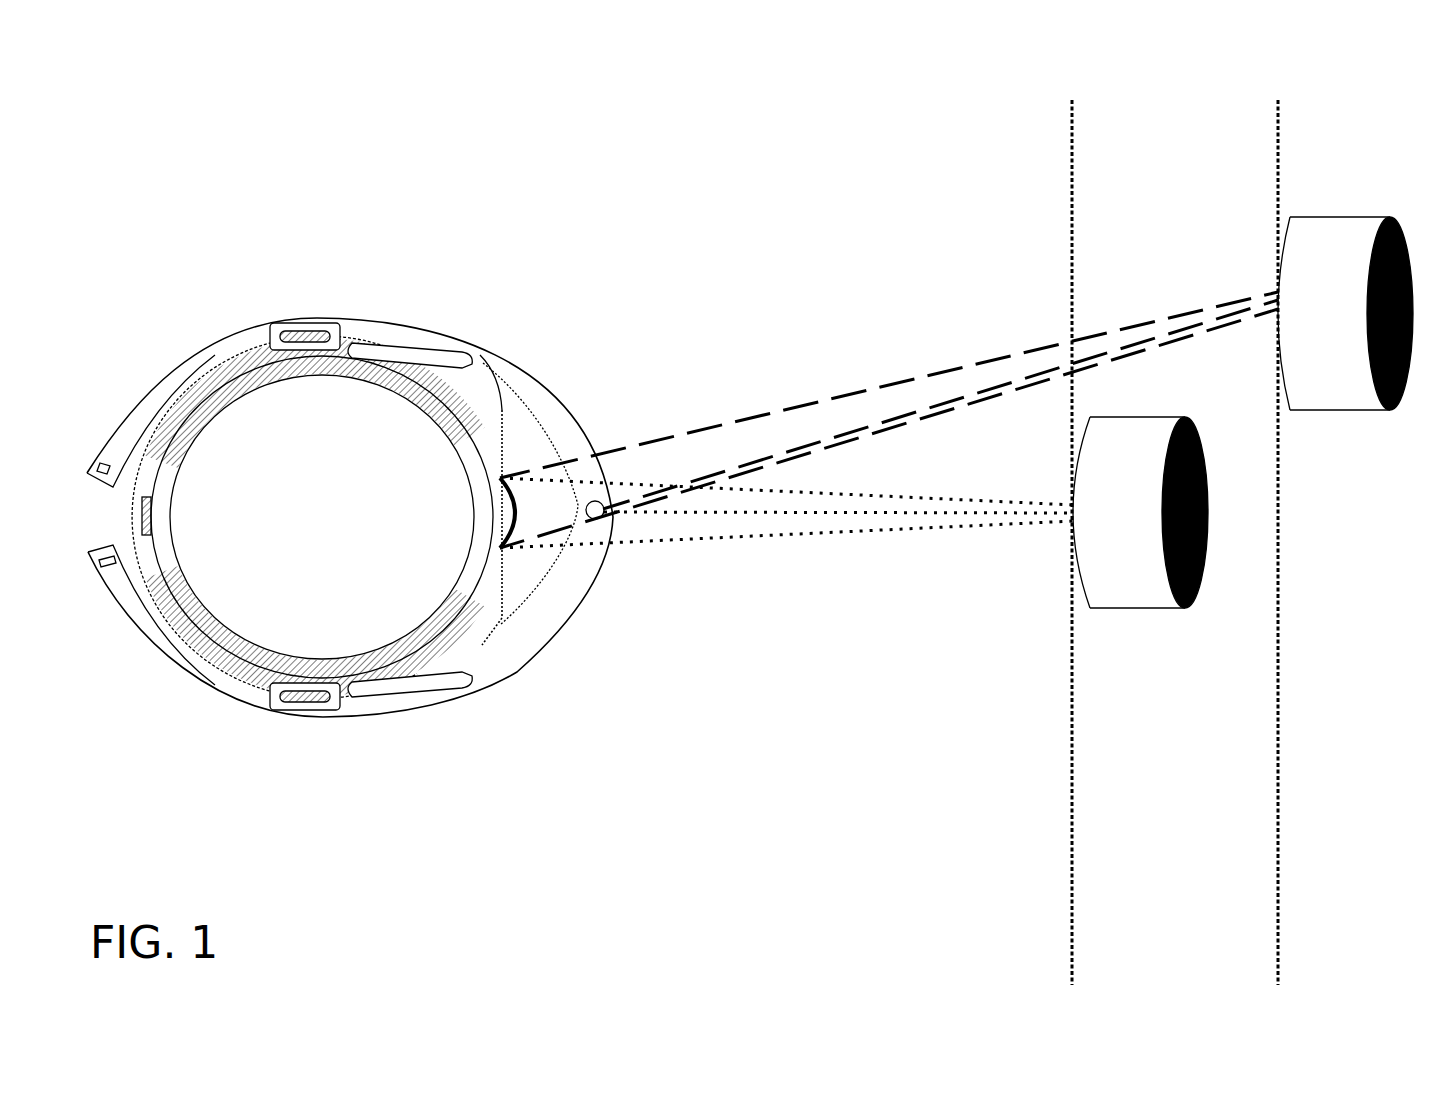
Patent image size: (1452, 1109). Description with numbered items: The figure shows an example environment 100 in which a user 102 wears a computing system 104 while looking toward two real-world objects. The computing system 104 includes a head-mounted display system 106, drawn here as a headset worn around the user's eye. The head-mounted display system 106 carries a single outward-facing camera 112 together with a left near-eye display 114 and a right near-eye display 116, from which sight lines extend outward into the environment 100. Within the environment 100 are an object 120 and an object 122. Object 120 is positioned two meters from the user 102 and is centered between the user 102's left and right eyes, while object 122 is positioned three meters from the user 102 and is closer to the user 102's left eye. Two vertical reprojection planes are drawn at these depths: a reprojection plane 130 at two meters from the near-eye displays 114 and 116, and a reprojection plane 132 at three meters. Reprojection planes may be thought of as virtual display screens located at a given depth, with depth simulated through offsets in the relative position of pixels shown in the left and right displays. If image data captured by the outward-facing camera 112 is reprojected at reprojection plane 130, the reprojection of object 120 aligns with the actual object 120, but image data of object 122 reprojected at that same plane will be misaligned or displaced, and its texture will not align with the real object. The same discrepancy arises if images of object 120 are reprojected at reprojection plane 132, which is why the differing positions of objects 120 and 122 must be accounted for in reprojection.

The environment 100 is at (204, 109).
The user 102 is at (342, 517).
The computing system 104 is at (156, 323).
The head-mounted display system 106 is at (517, 672).
The outward-facing camera 112 is at (597, 519).
The left near-eye display 114 is at (500, 478).
The right near-eye display 116 is at (500, 548).
The object 120 is at (1140, 512).
The object 122 is at (1345, 313).
The reprojection plane 130 is at (1072, 140).
The reprojection plane 132 is at (1278, 140).